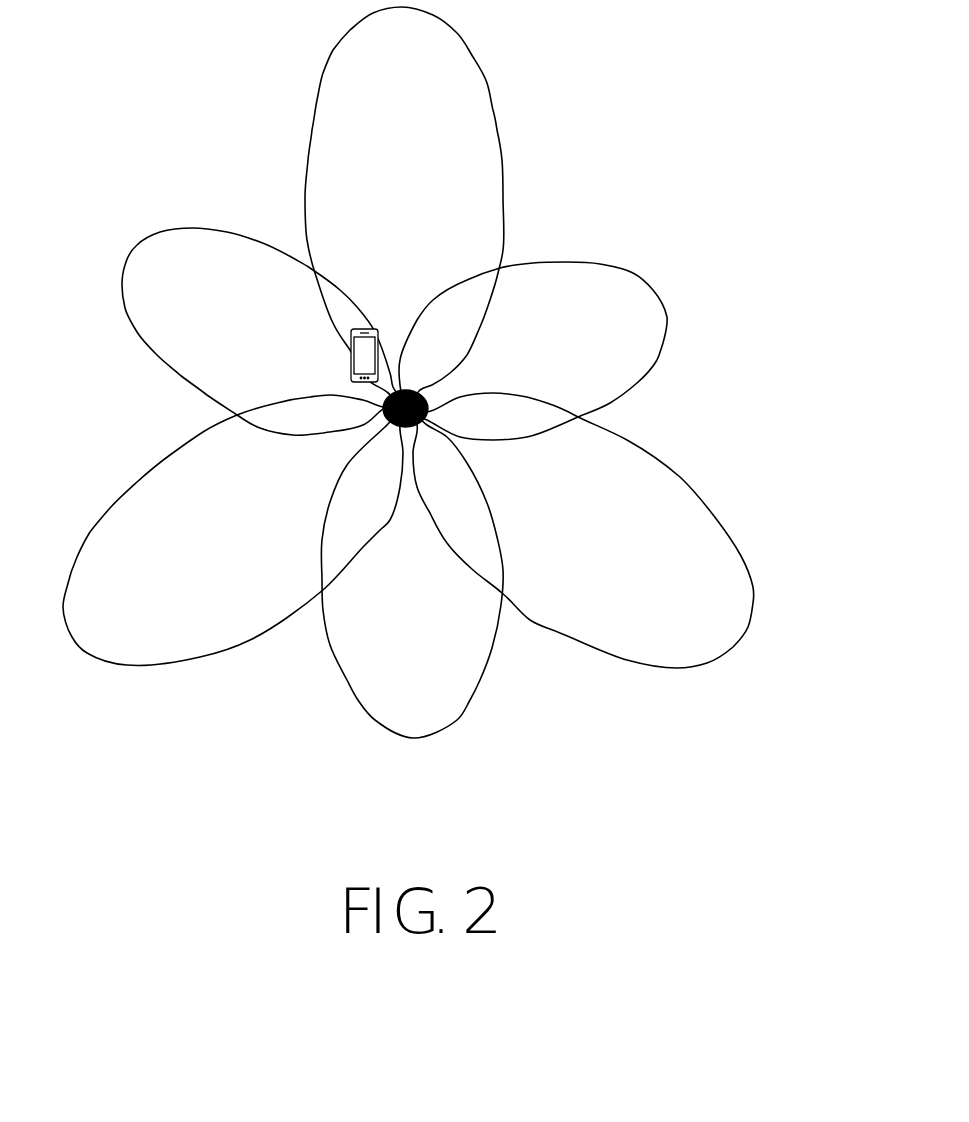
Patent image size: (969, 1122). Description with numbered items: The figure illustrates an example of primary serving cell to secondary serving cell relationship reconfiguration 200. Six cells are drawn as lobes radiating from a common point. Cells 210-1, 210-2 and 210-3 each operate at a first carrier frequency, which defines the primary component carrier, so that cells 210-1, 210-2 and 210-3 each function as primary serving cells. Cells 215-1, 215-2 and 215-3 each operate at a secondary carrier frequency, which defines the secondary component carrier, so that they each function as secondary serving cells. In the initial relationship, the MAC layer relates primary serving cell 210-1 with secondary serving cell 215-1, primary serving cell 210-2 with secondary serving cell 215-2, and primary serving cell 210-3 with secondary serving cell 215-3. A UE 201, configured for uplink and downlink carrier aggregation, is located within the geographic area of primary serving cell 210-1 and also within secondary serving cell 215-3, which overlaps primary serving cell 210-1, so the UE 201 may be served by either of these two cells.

The primary serving cell to secondary serving cell relationship reconfiguration 200 is at (787, 641).
The UE 201 is at (351, 340).
The primary serving cell 210-1 is at (427, 94).
The primary serving cell 210-2 is at (698, 624).
The primary serving cell 210-3 is at (148, 628).
The secondary serving cell 215-1 is at (614, 334).
The secondary serving cell 215-2 is at (443, 660).
The secondary serving cell 215-3 is at (202, 299).